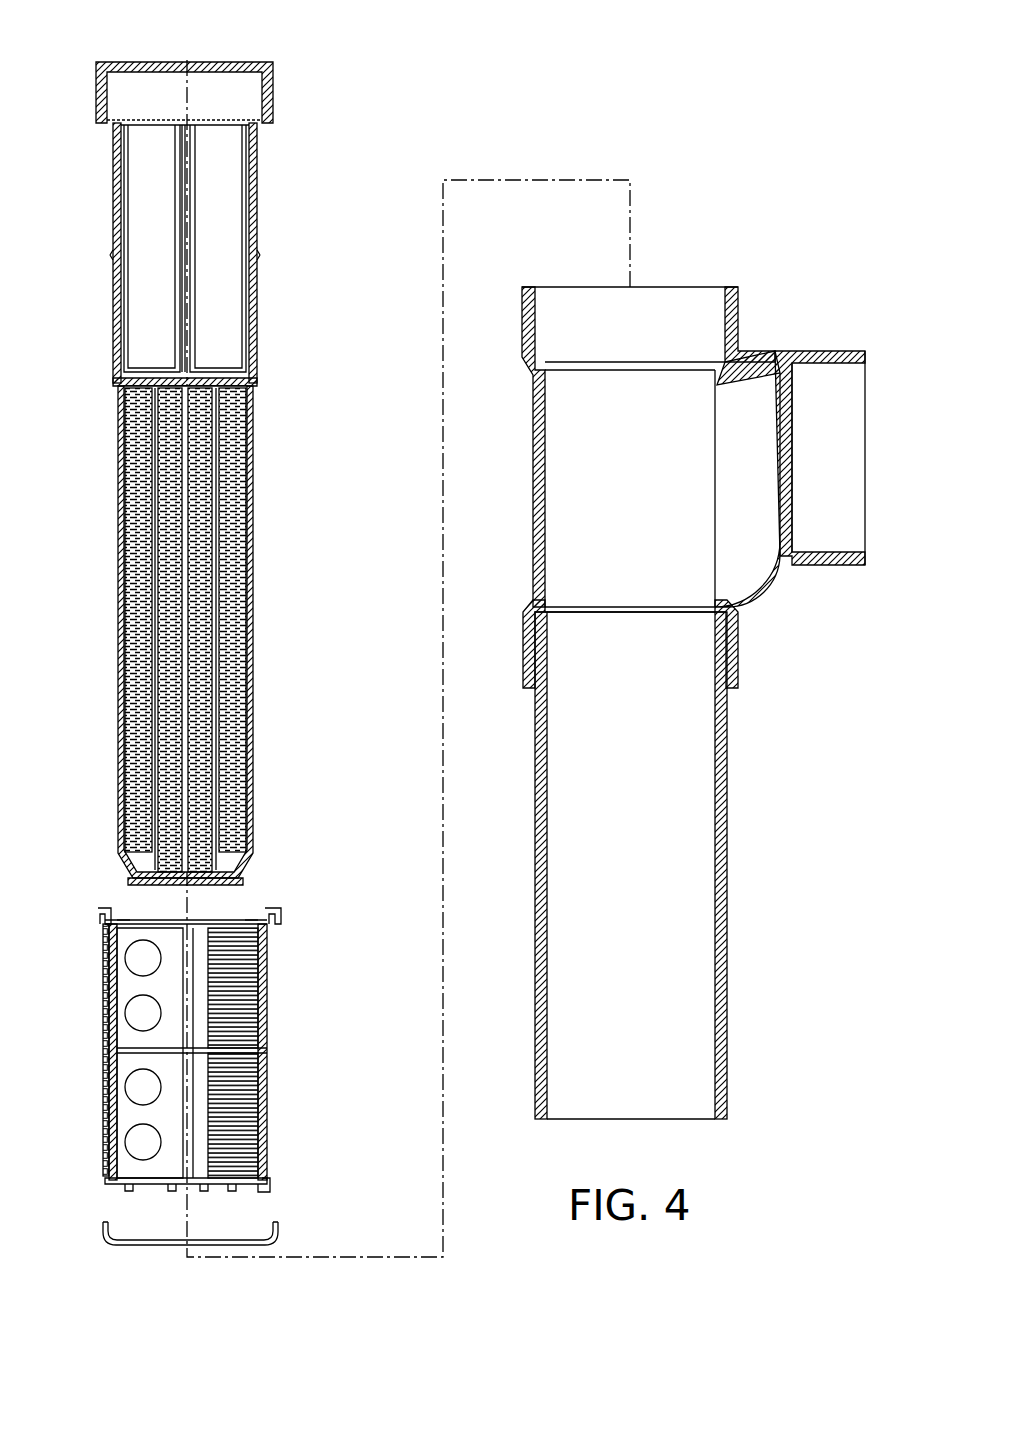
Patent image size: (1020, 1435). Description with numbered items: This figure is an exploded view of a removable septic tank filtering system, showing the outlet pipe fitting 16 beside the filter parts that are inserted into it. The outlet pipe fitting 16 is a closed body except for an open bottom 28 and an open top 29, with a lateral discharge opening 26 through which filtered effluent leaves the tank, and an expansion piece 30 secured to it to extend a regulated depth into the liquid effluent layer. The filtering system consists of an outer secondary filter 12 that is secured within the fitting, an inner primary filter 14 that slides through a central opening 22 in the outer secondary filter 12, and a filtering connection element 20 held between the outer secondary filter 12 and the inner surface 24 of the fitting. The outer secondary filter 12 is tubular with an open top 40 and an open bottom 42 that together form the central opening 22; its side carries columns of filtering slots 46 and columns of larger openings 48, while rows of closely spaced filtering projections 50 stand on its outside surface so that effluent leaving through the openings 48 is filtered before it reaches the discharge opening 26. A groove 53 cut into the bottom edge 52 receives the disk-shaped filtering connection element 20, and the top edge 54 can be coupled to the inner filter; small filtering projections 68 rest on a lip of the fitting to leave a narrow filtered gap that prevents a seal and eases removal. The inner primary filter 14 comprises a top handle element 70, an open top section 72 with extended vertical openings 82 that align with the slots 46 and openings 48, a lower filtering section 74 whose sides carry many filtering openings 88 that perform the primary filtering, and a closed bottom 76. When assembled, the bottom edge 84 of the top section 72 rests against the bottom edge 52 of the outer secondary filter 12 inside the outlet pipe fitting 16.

The outer secondary filter 12 is at (300, 1065).
The inner primary filter 14 is at (300, 343).
The outlet pipe fitting 16 is at (516, 526).
The filtering connection element 20 is at (136, 1246).
The central opening 22 is at (125, 915).
The inner surface 24 is at (722, 757).
The discharge opening 26 is at (842, 456).
The open bottom 28 is at (626, 582).
The open top 29 is at (712, 312).
The expansion piece 30 is at (724, 855).
The open top 40 is at (258, 915).
The open bottom 42 is at (128, 1192).
The filtering slots 46 is at (238, 990).
The larger openings 48 is at (138, 960).
The filtering projections 50 is at (100, 1032).
The bottom edge 52 is at (265, 1196).
The groove 53 is at (267, 1178).
The top edge 54 is at (281, 924).
The filtering projections 68 is at (104, 944).
The top handle element 70 is at (262, 64).
The open top section 72 is at (256, 300).
The lower filtering section 74 is at (253, 521).
The closed bottom 76 is at (238, 884).
The vertical openings 82 is at (223, 225).
The bottom edge 84 is at (258, 383).
The filtering openings 88 is at (238, 590).